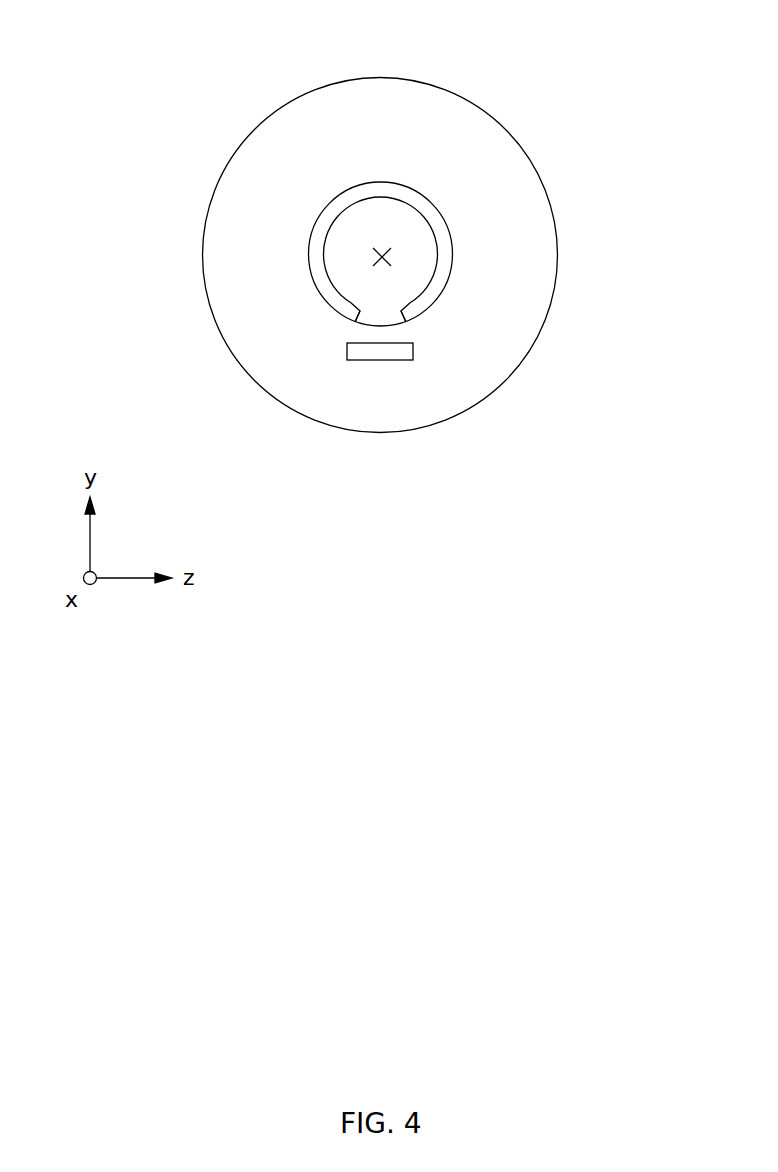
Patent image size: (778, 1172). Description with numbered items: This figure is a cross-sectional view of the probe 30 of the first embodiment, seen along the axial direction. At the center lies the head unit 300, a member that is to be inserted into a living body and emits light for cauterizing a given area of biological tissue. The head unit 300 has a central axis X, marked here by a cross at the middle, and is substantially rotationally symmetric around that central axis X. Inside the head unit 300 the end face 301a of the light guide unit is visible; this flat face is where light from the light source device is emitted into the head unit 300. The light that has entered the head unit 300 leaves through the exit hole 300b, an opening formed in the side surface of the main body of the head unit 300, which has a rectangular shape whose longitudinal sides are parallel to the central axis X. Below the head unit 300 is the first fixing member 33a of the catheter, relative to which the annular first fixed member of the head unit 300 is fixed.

The probe 30 is at (222, 100).
The head unit 300 is at (453, 257).
The end face 301a is at (412, 233).
The exit hole 300b is at (392, 322).
The first fixing member 33a is at (358, 352).
The central axis X is at (375, 257).